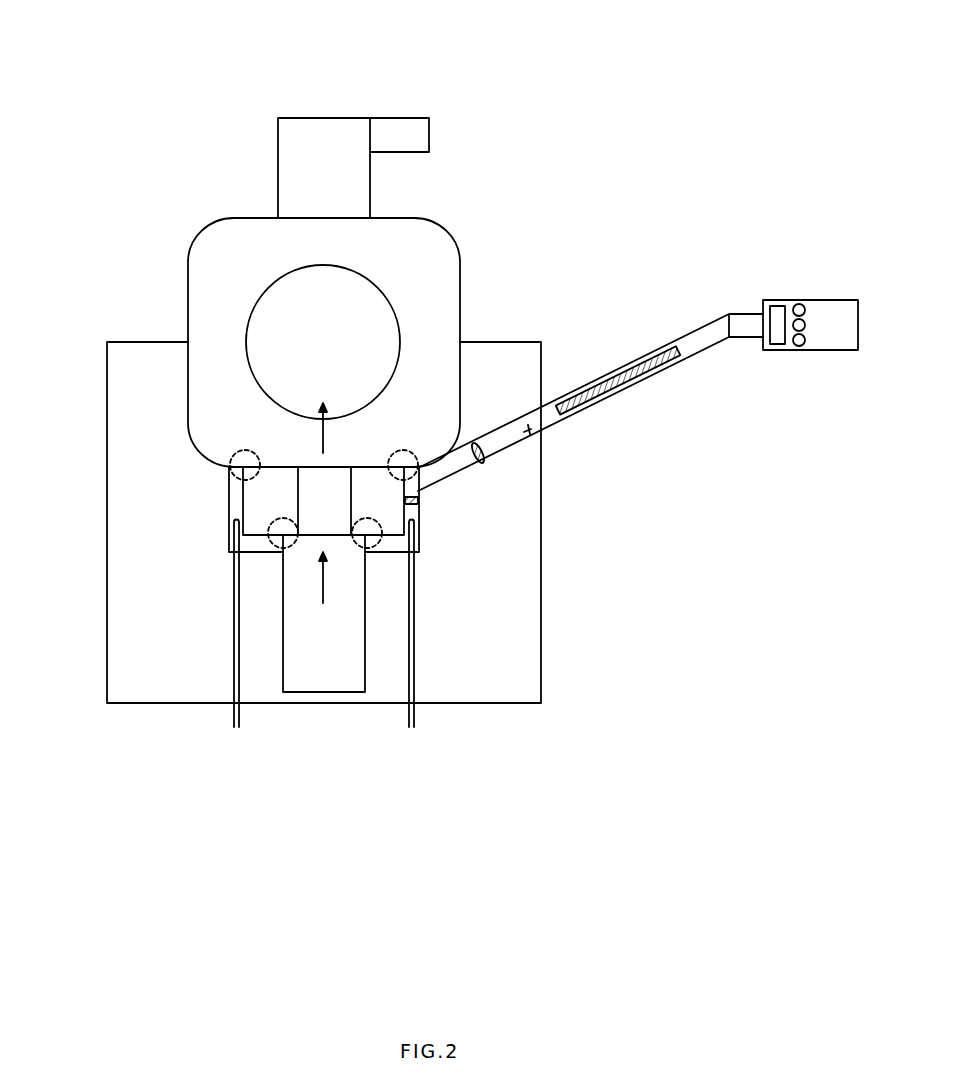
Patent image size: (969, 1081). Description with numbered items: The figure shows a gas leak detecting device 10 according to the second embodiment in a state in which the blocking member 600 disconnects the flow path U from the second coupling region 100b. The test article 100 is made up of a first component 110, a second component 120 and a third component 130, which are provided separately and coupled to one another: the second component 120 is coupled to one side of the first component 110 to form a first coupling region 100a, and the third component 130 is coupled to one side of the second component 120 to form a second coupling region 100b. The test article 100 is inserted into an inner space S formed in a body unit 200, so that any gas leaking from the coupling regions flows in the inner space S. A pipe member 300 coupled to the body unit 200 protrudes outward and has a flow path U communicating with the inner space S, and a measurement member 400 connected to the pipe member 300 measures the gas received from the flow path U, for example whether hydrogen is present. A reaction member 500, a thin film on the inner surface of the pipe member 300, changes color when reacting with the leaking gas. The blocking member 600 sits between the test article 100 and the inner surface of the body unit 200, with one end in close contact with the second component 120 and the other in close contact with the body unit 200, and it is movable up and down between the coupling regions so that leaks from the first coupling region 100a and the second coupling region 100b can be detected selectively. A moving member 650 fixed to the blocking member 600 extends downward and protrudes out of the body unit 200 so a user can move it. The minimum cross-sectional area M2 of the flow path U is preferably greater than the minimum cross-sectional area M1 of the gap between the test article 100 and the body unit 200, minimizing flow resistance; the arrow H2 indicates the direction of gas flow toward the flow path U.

The gas leak detecting device 10 is at (156, 51).
The test article 100 is at (178, 319).
The first component 110 is at (413, 297).
The first coupling region 100a is at (422, 450).
The second coupling region 100b is at (368, 549).
The second component 120 is at (388, 523).
The third component 130 is at (338, 675).
The body unit 200 is at (155, 630).
The pipe member 300 is at (636, 344).
The measurement member 400 is at (830, 312).
The reaction member 500 is at (622, 388).
The blocking member 600 is at (233, 517).
The moving member 650 is at (233, 598).
The inner space S is at (264, 544).
The height direction H2 is at (321, 594).
The minimum cross-sectional area of the space between the test article and the body M1 is at (419, 500).
The minimum cross-sectional area of the flow path M2 is at (487, 462).
The flow path U is at (534, 440).